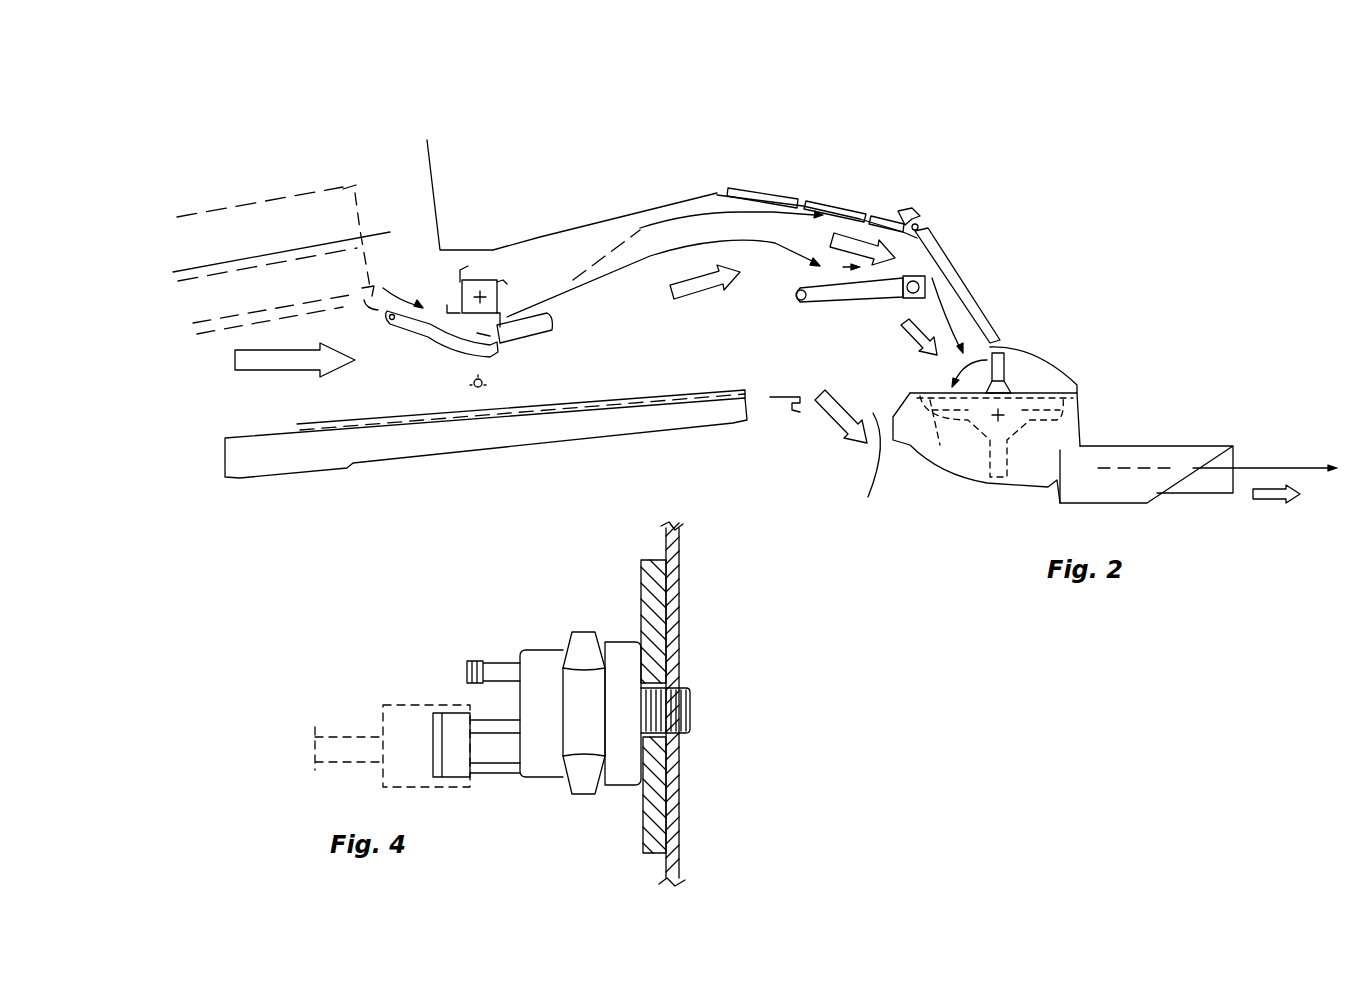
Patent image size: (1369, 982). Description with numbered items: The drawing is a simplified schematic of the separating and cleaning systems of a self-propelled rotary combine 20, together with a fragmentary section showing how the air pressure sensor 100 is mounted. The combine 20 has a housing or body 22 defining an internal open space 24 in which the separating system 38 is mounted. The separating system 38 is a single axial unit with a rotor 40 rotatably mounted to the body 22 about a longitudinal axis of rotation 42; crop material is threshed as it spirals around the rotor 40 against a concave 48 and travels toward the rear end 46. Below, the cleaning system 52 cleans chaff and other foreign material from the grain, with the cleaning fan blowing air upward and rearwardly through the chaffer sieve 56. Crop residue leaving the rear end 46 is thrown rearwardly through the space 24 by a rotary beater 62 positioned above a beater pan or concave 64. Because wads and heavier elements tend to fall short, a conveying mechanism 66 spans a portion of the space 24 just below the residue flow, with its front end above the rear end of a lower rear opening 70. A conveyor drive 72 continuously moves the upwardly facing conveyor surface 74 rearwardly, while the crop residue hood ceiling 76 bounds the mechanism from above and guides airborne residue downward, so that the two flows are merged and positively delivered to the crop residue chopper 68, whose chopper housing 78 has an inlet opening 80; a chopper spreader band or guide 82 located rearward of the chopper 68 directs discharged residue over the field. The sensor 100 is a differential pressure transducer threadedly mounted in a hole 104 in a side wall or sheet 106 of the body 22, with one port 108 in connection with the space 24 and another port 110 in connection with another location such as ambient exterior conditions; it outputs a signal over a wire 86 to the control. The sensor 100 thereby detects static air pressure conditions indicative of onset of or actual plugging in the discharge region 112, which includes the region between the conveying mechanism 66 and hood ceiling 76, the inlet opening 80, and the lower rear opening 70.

In FIG. 2, the self-propelled rotary combine 20 is at (1116, 135).
In FIG. 2, the housing or body 22 is at (767, 189).
In FIG. 4, the housing or body 22 is at (678, 527).
In FIG. 2, the internal open area or space 24 is at (558, 253).
In FIG. 2, the separating system 38 is at (357, 176).
In FIG. 2, the rotor 40 is at (267, 198).
In FIG. 2, the longitudinal axis of rotation 42 is at (383, 232).
In FIG. 2, the rear end 46 is at (325, 190).
In FIG. 2, the concave 48 is at (193, 334).
In FIG. 2, the cleaning system 52 is at (215, 456).
In FIG. 2, the chaffer sieve 56 is at (303, 425).
In FIG. 2, the rotary beater 62 is at (489, 280).
In FIG. 2, the beater pan or concave 64 is at (553, 317).
In FIG. 2, the conveying mechanism 66 is at (793, 305).
In FIG. 2, the crop residue chopper 68 is at (1080, 410).
In FIG. 2, the lower rear opening 70 is at (873, 476).
In FIG. 2, the conveyor drive 72 is at (930, 276).
In FIG. 2, the conveyor surface 74 is at (893, 267).
In FIG. 2, the crop residue hood ceiling 76 is at (887, 210).
In FIG. 2, the chopper housing 78 is at (1040, 357).
In FIG. 2, the inlet opening 80 is at (940, 372).
In FIG. 2, the chopper spreader band or guide 82 is at (1234, 448).
In FIG. 4, the wire 86 is at (337, 733).
In FIG. 2, the air pressure sensor 100 is at (483, 390).
In FIG. 4, the air pressure sensor 100 is at (613, 637).
In FIG. 4, the hole 104 is at (690, 718).
In FIG. 4, the side wall or sheet 106 is at (679, 553).
In FIG. 4, the port 108 is at (693, 693).
In FIG. 4, the port 110 is at (467, 668).
In FIG. 2, the discharge region 112 is at (935, 517).